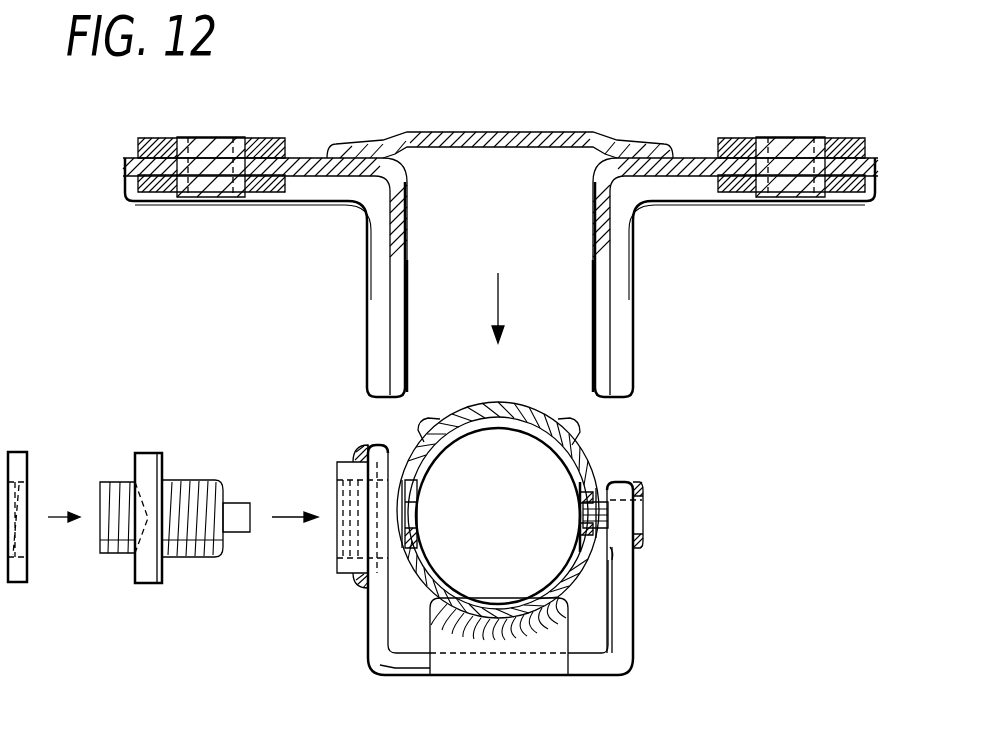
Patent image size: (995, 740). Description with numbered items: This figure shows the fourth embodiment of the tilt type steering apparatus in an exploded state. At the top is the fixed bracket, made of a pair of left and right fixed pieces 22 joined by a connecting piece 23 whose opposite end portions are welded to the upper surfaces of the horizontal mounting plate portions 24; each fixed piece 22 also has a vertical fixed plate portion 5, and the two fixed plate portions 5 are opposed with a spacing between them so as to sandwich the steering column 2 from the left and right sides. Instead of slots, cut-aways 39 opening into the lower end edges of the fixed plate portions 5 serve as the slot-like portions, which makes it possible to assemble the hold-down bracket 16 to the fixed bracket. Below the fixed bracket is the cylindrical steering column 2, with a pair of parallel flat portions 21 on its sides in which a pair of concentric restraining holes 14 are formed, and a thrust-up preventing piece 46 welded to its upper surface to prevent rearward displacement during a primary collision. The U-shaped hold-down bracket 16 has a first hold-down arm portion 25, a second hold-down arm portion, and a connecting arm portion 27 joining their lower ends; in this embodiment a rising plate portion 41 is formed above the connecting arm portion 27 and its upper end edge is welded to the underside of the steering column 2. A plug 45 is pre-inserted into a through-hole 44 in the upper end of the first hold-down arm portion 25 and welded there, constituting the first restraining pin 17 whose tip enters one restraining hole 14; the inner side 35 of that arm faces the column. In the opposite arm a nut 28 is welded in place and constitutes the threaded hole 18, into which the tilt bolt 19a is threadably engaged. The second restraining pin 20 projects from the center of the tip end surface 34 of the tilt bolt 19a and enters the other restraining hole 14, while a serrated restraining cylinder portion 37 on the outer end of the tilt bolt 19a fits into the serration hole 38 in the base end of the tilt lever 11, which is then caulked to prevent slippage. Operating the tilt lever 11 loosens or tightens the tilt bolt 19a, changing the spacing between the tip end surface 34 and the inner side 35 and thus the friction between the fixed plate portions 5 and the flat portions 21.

The steering column 2 is at (585, 457).
The fixed plate portion 5 is at (393, 240).
The tilt lever 11 is at (22, 467).
The restraining hole 14 is at (420, 517).
The hold-down bracket 16 is at (600, 665).
The first restraining pin 17 is at (583, 520).
The threaded hole 18 is at (337, 488).
The tilt bolt 19a is at (157, 567).
The second restraining pin 20 is at (237, 508).
The flat portion 21 is at (598, 483).
The fixed piece 22 is at (163, 163).
The connecting piece 23 is at (490, 132).
The mounting plate portion 24 is at (313, 167).
The first hold-down arm portion 25 is at (623, 563).
The connecting arm portion 27 is at (410, 663).
The nut 28 is at (337, 567).
The tip end surface 34 is at (223, 547).
The inner side 35 is at (610, 547).
The restraining cylinder portion 37 is at (115, 482).
The serration hole 38 is at (30, 542).
The cut-away 39 is at (395, 258).
The rising plate portion 41 is at (558, 630).
The through-hole 44 is at (622, 528).
The plug 45 is at (642, 507).
The thrust-up preventing piece 46 is at (520, 402).